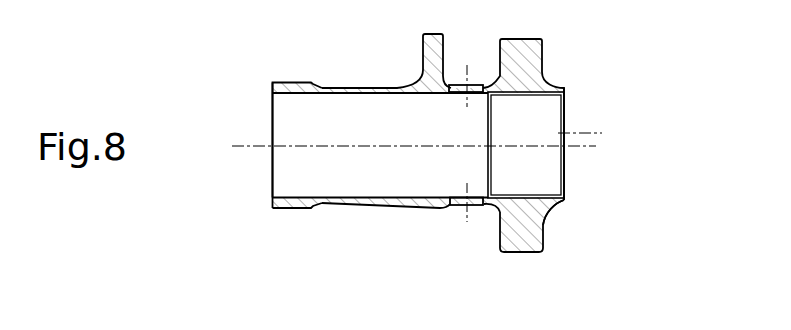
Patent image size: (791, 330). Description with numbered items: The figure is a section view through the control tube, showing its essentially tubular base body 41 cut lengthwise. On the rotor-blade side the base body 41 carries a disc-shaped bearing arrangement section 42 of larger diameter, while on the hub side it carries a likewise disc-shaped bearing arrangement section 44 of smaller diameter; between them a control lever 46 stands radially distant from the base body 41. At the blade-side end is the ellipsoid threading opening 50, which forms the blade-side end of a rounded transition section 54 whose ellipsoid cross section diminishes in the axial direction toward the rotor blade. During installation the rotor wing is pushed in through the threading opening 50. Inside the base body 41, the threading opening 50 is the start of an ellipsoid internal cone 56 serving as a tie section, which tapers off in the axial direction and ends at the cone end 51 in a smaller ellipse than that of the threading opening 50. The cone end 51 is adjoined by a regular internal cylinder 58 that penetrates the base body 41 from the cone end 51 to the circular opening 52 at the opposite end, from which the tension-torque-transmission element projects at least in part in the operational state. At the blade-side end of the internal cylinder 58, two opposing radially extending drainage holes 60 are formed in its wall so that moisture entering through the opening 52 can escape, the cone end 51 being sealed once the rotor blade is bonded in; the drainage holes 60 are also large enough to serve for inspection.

The base body 41 is at (353, 203).
The bearing arrangement section 42 is at (541, 46).
The bearing arrangement section 44 is at (300, 82).
The control lever 46 is at (423, 49).
The threading opening 50 is at (586, 161).
The cone end 51 is at (489, 95).
The circular opening 52 is at (247, 165).
The transition section 54 is at (556, 203).
The internal cone 56 is at (542, 212).
The internal cylinder 58 is at (297, 93).
The drainage holes 60 is at (458, 205).